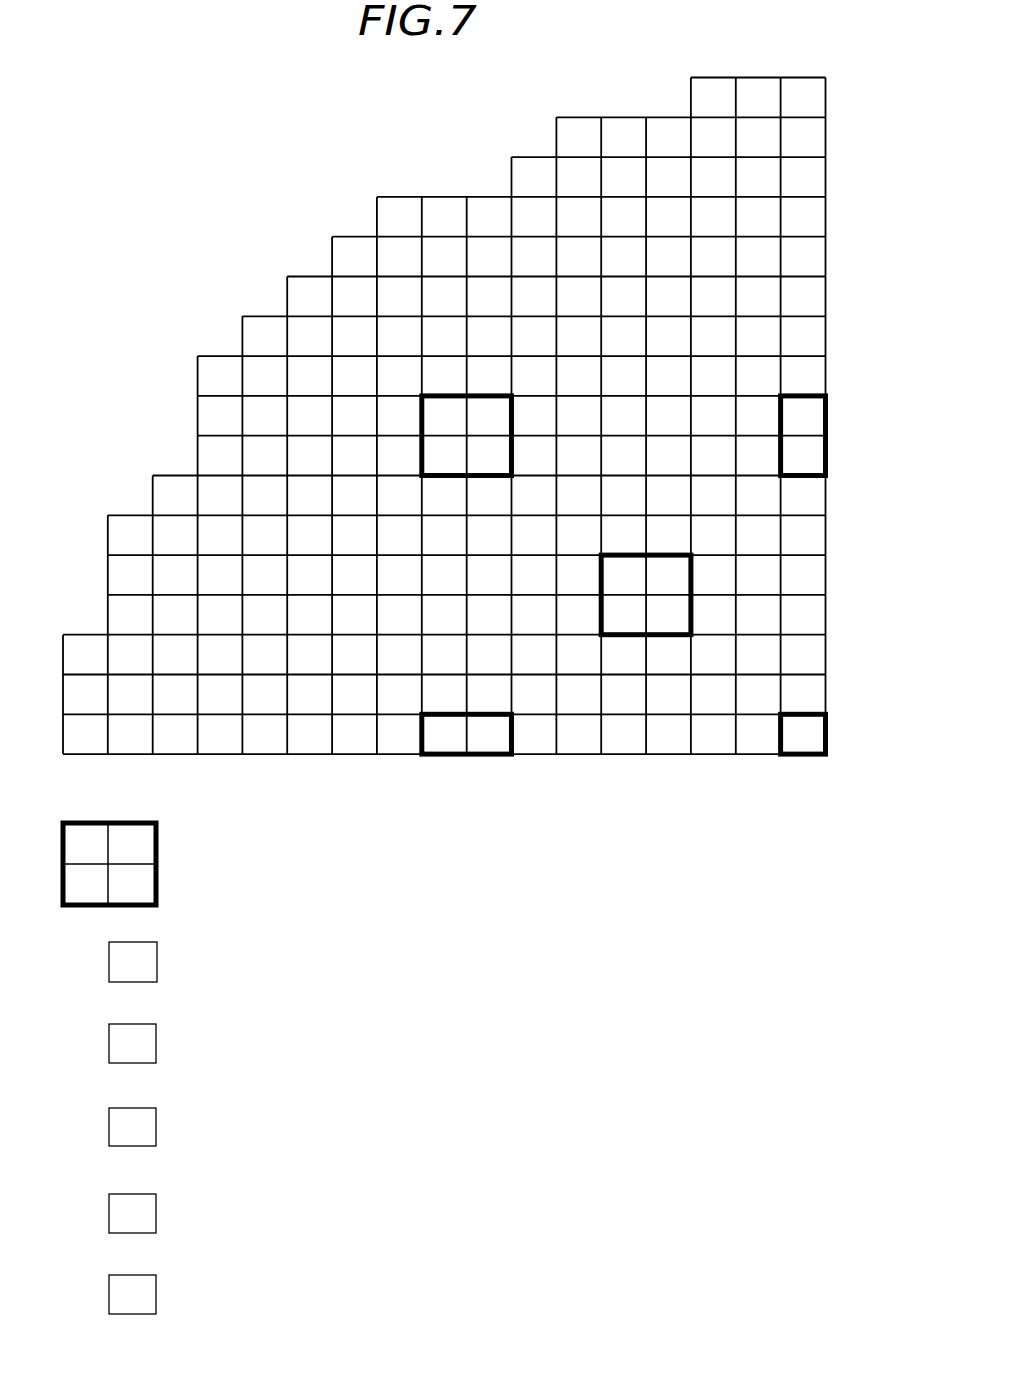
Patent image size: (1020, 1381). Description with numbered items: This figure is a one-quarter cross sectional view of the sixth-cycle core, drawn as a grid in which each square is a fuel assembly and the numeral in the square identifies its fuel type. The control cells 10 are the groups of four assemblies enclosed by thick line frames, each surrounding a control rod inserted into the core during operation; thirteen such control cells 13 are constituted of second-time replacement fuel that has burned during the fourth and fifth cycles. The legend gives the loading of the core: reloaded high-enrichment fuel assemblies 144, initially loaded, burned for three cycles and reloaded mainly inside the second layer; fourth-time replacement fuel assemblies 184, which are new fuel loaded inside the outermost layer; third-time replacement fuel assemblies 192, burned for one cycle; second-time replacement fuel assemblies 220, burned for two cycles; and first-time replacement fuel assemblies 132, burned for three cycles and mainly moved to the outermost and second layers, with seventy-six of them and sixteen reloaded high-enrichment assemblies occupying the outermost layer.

The control cell 10 is at (680, 638).
The control cells 13 is at (444, 650).
The reloaded high-enrichment fuel assemblies 144 is at (367, 967).
The fourth-time replacement fuel assemblies 184 is at (463, 1043).
The third-time replacement fuel assemblies 192 is at (449, 1127).
The second-time replacement fuel assemblies 220 is at (465, 1213).
The first-time replacement fuel assemblies 132 is at (447, 1294).